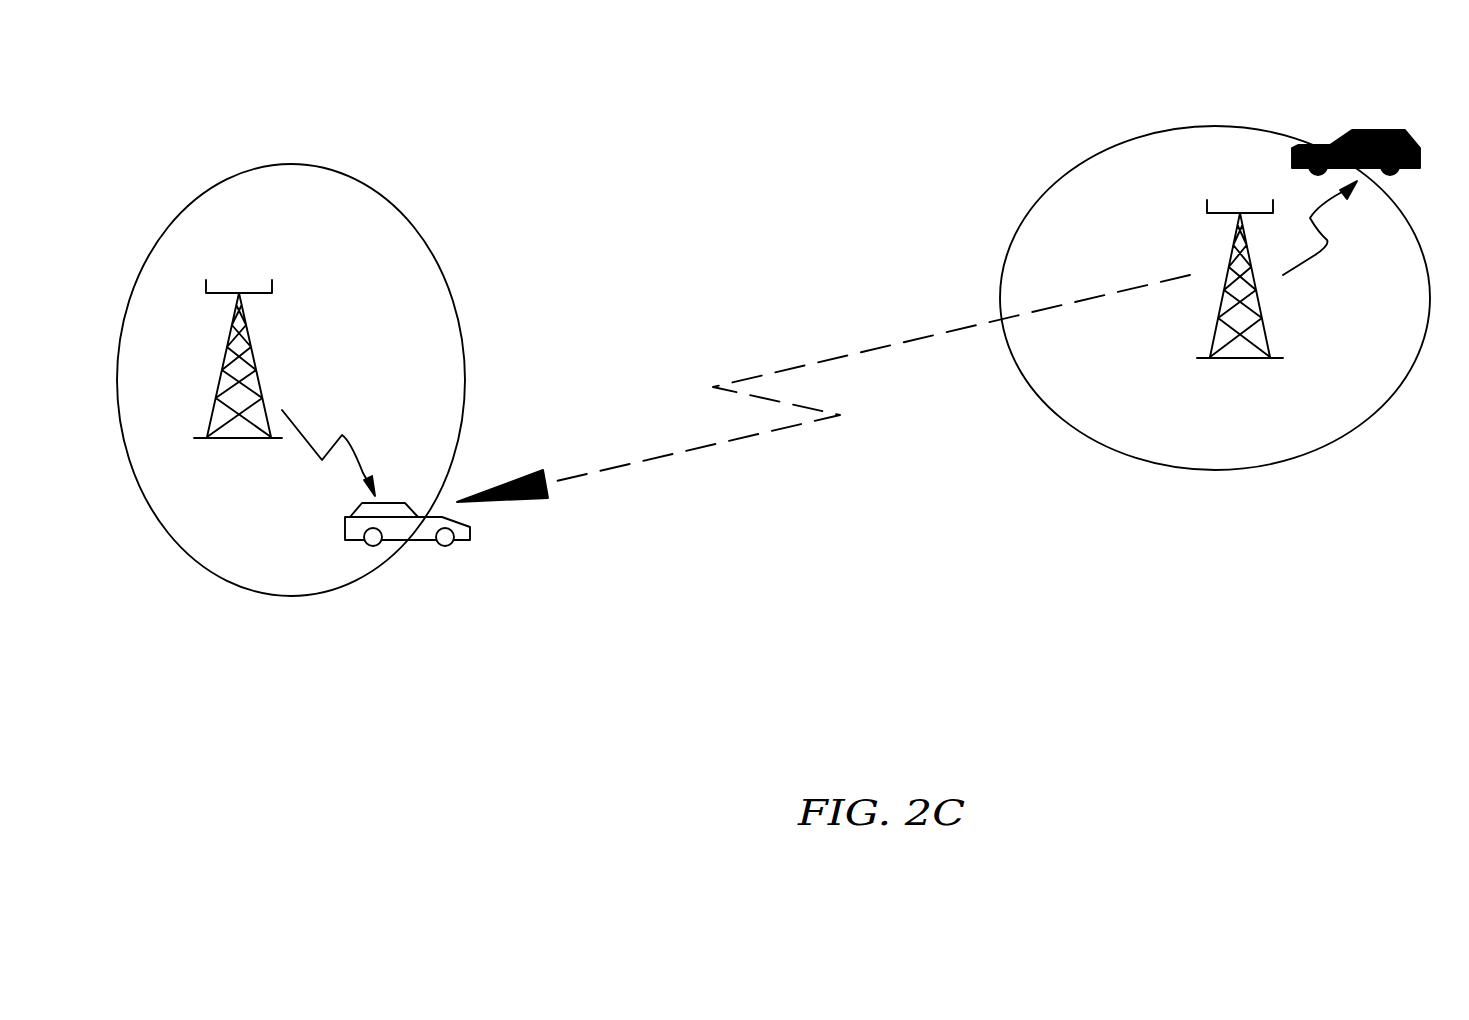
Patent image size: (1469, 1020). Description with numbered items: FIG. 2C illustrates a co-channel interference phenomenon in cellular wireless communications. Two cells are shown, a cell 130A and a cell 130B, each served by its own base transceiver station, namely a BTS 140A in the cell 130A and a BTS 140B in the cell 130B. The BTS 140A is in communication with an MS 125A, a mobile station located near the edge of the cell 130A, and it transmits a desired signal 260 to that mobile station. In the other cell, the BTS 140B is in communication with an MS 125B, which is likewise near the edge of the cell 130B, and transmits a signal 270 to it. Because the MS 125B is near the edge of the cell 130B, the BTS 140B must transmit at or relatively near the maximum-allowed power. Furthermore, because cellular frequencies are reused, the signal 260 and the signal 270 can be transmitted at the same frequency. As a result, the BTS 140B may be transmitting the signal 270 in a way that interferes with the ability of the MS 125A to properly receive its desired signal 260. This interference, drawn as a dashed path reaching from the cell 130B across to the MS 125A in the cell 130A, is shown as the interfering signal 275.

The cell 130A is at (241, 171).
The BTS 140A is at (239, 292).
The signal 260 is at (282, 410).
The MS 125A is at (446, 547).
The cell 130B is at (1230, 471).
The BTS 140B is at (1240, 208).
The signal 270 is at (1319, 253).
The MS 125B is at (1382, 128).
The interfering signal 275 is at (848, 357).